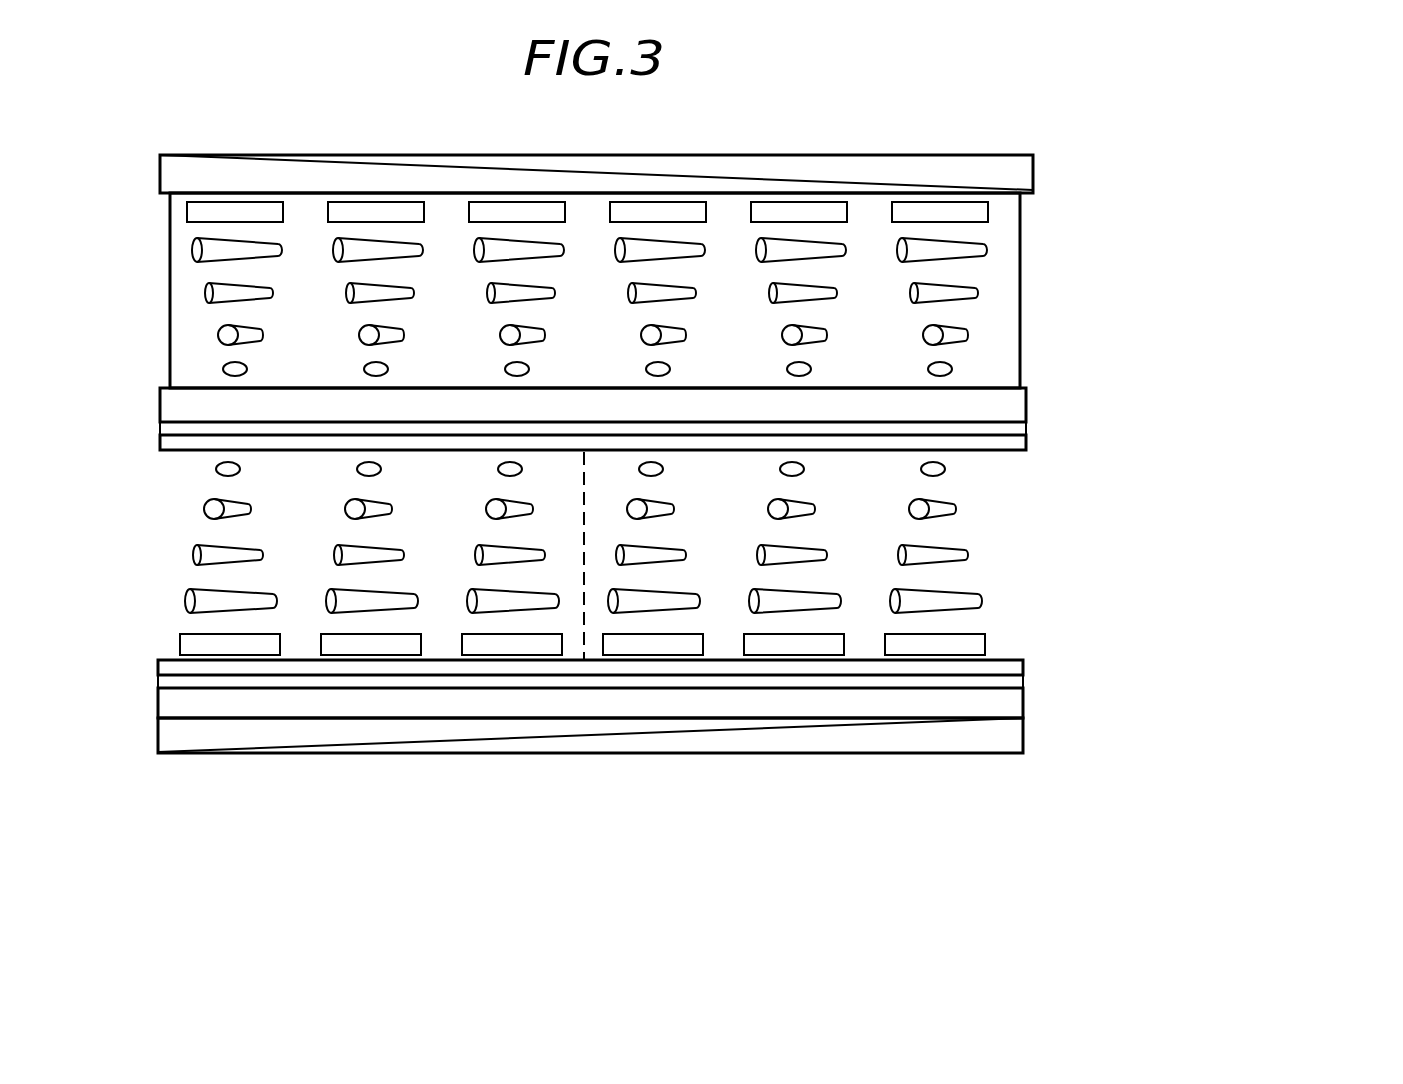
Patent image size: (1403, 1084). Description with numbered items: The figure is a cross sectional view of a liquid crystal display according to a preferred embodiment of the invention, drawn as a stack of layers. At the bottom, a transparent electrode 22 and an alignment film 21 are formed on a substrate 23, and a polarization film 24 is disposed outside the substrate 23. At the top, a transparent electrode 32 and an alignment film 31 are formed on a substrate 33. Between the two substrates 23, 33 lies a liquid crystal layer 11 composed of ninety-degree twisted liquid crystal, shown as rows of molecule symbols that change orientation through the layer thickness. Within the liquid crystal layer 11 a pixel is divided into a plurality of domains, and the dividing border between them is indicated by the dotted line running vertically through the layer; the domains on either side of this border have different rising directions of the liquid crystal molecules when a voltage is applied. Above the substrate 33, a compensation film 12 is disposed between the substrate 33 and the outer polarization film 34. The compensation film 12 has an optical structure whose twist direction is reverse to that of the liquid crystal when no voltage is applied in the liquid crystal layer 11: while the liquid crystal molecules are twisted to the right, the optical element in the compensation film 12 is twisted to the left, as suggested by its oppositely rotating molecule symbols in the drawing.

The polarization film 34 is at (1027, 170).
The compensation film 12 is at (1008, 252).
The substrate 33 is at (1031, 395).
The transparent electrode 32 is at (1026, 428).
The alignment film 31 is at (1026, 443).
The liquid crystal layer 11 is at (972, 552).
The alignment film 21 is at (1025, 667).
The transparent electrode 22 is at (1023, 683).
The substrate 23 is at (1023, 708).
The polarization film 24 is at (1023, 743).